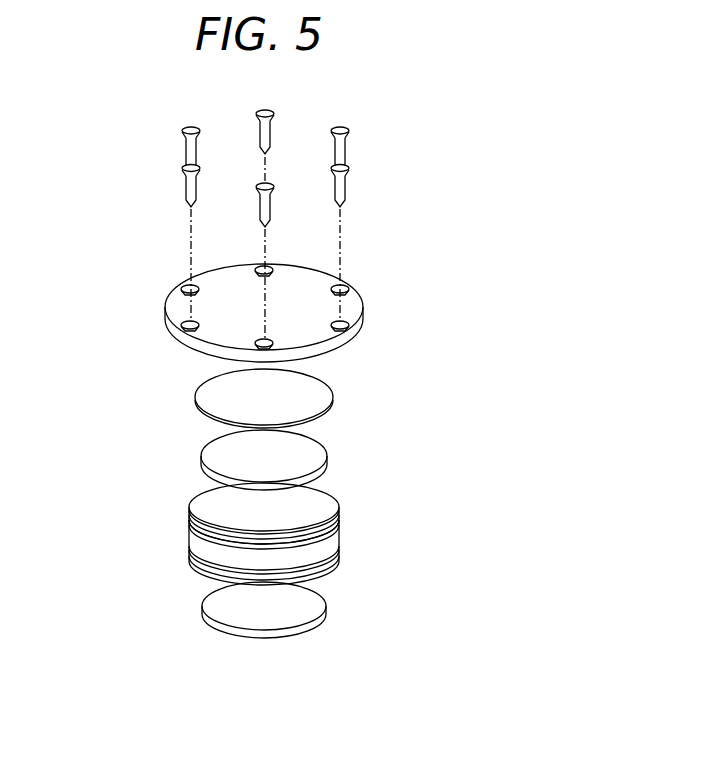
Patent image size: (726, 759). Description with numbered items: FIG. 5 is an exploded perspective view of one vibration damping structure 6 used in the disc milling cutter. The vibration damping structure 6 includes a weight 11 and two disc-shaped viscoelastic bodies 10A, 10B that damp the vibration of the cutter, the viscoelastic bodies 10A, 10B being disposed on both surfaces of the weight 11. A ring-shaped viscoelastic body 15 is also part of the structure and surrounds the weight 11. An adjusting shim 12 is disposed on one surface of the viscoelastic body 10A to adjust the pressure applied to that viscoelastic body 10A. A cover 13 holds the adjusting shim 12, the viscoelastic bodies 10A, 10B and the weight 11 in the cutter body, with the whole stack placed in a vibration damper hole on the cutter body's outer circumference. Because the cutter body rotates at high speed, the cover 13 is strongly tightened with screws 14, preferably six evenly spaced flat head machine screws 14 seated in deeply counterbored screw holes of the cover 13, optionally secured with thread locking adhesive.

The vibration damping structure 6 is at (126, 219).
The screws 14 is at (345, 154).
The cover 13 is at (352, 307).
The adjusting shim 12 is at (318, 394).
The disc-shaped viscoelastic body 10A is at (318, 462).
The weight 11 is at (318, 549).
The ring-shaped viscoelastic body 15 is at (192, 525).
The disc-shaped viscoelastic body 10B is at (322, 613).